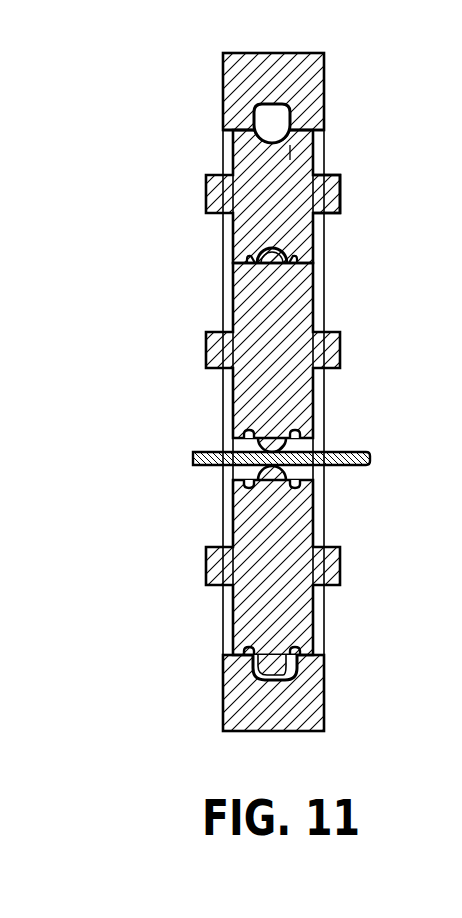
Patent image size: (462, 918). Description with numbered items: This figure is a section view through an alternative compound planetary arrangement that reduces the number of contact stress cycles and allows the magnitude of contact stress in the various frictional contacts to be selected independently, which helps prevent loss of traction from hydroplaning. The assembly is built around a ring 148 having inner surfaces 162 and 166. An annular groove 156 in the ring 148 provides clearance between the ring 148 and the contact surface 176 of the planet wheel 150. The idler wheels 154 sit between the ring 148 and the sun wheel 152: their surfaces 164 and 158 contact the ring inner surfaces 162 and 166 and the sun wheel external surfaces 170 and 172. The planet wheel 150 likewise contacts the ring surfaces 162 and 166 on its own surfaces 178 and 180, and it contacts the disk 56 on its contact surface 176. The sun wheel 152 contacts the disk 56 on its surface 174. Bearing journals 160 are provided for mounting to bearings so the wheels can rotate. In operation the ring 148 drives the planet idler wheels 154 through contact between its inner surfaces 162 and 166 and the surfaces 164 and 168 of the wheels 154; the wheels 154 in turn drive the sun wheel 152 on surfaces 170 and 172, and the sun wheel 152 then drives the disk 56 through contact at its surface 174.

The ring 148 is at (258, 73).
The planet wheel 150 is at (281, 586).
The sun wheel 152 is at (272, 303).
The idler wheels 154 is at (265, 163).
The annular groove 156 is at (297, 102).
The surface 158 is at (310, 133).
The bearing journals 160 is at (340, 213).
The inner surface 162 is at (270, 112).
The surface 164 is at (268, 141).
The inner surface 166 is at (306, 122).
The surface 168 is at (300, 158).
The external surface 170 is at (316, 437).
The external surface 172 is at (240, 440).
The surface 174 is at (272, 253).
The contact surface 176 is at (277, 667).
The surface 178 is at (300, 478).
The surface 180 is at (238, 481).
The disk 56 is at (215, 459).